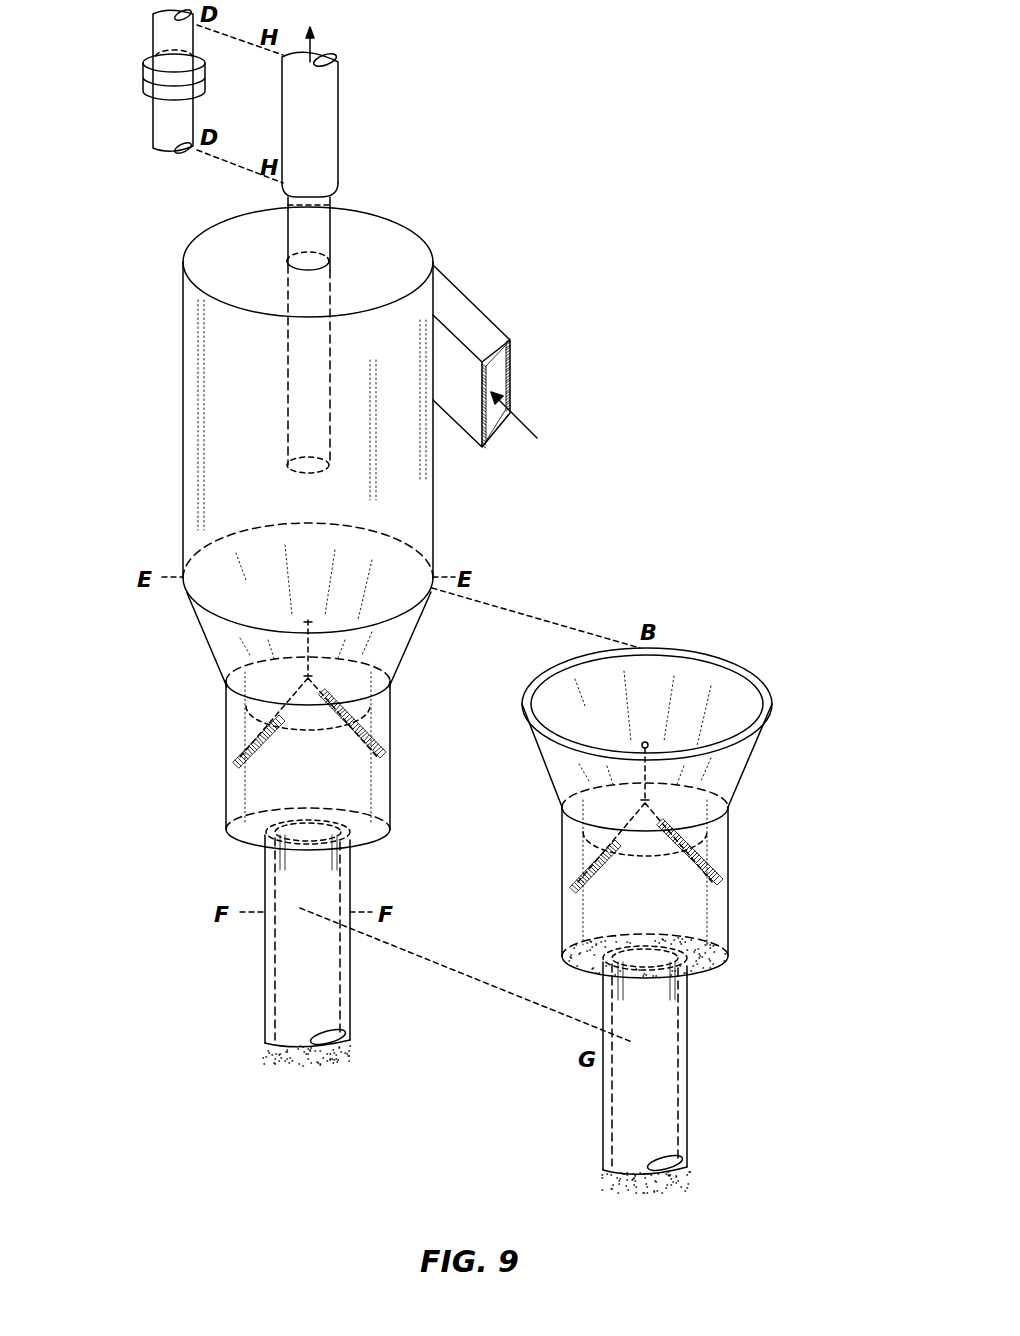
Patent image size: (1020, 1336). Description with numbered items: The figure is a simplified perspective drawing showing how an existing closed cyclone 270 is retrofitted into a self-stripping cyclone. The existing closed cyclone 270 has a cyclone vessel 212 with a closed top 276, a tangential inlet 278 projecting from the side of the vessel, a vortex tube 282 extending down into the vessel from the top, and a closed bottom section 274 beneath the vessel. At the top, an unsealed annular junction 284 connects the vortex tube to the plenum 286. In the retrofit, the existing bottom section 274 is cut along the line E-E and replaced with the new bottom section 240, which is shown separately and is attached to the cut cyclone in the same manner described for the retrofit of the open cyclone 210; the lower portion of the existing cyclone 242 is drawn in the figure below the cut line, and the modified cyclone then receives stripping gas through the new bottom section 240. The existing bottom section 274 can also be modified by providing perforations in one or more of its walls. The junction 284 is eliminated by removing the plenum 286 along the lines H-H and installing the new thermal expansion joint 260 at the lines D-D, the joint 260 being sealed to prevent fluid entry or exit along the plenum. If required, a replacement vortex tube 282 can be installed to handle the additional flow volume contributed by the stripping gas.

The cyclone 210 is at (475, 212).
The cyclone vessel 212 is at (433, 516).
The new bottom section 240 is at (728, 852).
The funnel 242 is at (402, 655).
The thermal expansion joint 260 is at (206, 83).
The closed cyclone 270 is at (166, 740).
The closed bottom section 274 is at (225, 720).
The closed top 276 is at (235, 226).
The tangential inlet 278 is at (475, 320).
The vortex tube 282 is at (305, 478).
The unsealed annular junction 284 is at (340, 197).
The plenum 286 is at (338, 126).